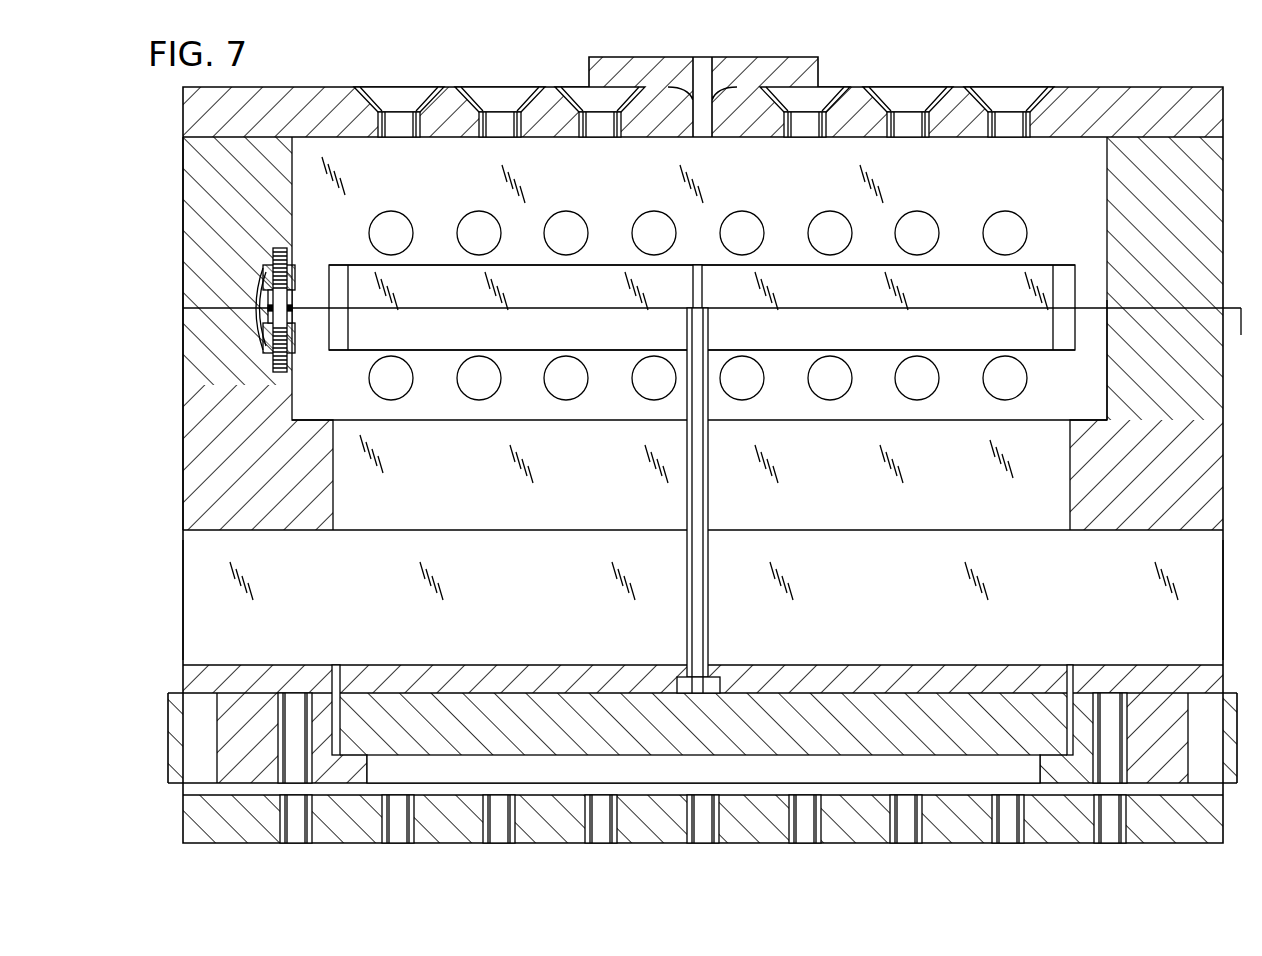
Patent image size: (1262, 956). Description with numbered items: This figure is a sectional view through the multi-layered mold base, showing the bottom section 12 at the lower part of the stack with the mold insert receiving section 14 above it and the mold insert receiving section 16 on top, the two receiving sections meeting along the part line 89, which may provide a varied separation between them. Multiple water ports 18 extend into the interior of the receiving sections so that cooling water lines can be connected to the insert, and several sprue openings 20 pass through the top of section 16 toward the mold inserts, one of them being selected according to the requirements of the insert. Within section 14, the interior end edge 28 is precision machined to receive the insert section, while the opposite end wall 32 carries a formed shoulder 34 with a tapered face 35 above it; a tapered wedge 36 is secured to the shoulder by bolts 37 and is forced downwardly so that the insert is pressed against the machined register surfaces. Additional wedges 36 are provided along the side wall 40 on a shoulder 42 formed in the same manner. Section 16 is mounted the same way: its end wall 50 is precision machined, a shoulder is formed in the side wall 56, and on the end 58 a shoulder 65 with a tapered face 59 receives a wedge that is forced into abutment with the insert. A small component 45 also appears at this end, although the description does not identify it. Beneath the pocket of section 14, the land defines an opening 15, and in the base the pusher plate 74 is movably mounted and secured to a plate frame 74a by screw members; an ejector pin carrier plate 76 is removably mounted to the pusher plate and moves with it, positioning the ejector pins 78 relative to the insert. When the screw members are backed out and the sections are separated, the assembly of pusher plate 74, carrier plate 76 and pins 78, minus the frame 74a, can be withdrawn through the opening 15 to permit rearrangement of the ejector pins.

The bottom section 12 is at (183, 608).
The mold insert receiving section 14 is at (183, 420).
The opening 15 is at (333, 465).
The mold insert receiving section 16 is at (183, 215).
The water ports 18 is at (482, 238).
The sprue openings 20 is at (487, 118).
The end edge 28 is at (1107, 365).
The end wall 32 is at (183, 462).
The shoulder 34 is at (258, 343).
The face 35 is at (265, 323).
The tapered wedge 36 is at (304, 270).
The bolts 37 is at (268, 330).
The side wall 40 is at (338, 336).
The shoulder 42 is at (520, 350).
The adjustment screw 45 is at (263, 270).
The end wall 50 is at (1107, 192).
The side wall 56 is at (335, 282).
The end 58 is at (222, 172).
The face 59 is at (262, 288).
The shoulder 65 is at (262, 268).
The pusher plate 74 is at (945, 730).
The plate frame 74a is at (326, 768).
The ejector pin carrier plate 76 is at (872, 683).
The ejector pins 78 is at (705, 585).
The part line 89 is at (1240, 336).